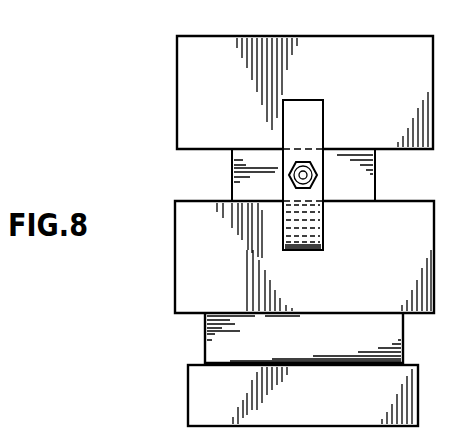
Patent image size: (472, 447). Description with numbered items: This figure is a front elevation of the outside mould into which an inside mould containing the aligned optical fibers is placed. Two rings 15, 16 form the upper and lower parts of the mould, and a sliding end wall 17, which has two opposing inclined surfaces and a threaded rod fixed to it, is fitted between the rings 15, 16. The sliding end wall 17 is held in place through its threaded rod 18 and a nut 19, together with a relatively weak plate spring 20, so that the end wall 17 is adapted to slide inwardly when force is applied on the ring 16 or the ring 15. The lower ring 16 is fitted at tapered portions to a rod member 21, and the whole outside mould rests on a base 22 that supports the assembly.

The ring 15 is at (307, 50).
The ring 16 is at (182, 254).
The sliding end wall 17 is at (240, 162).
The threaded rod 18 is at (293, 179).
The nut 19 is at (314, 182).
The plate spring 20 is at (312, 248).
The rod member 21 is at (212, 341).
The base 22 is at (200, 406).